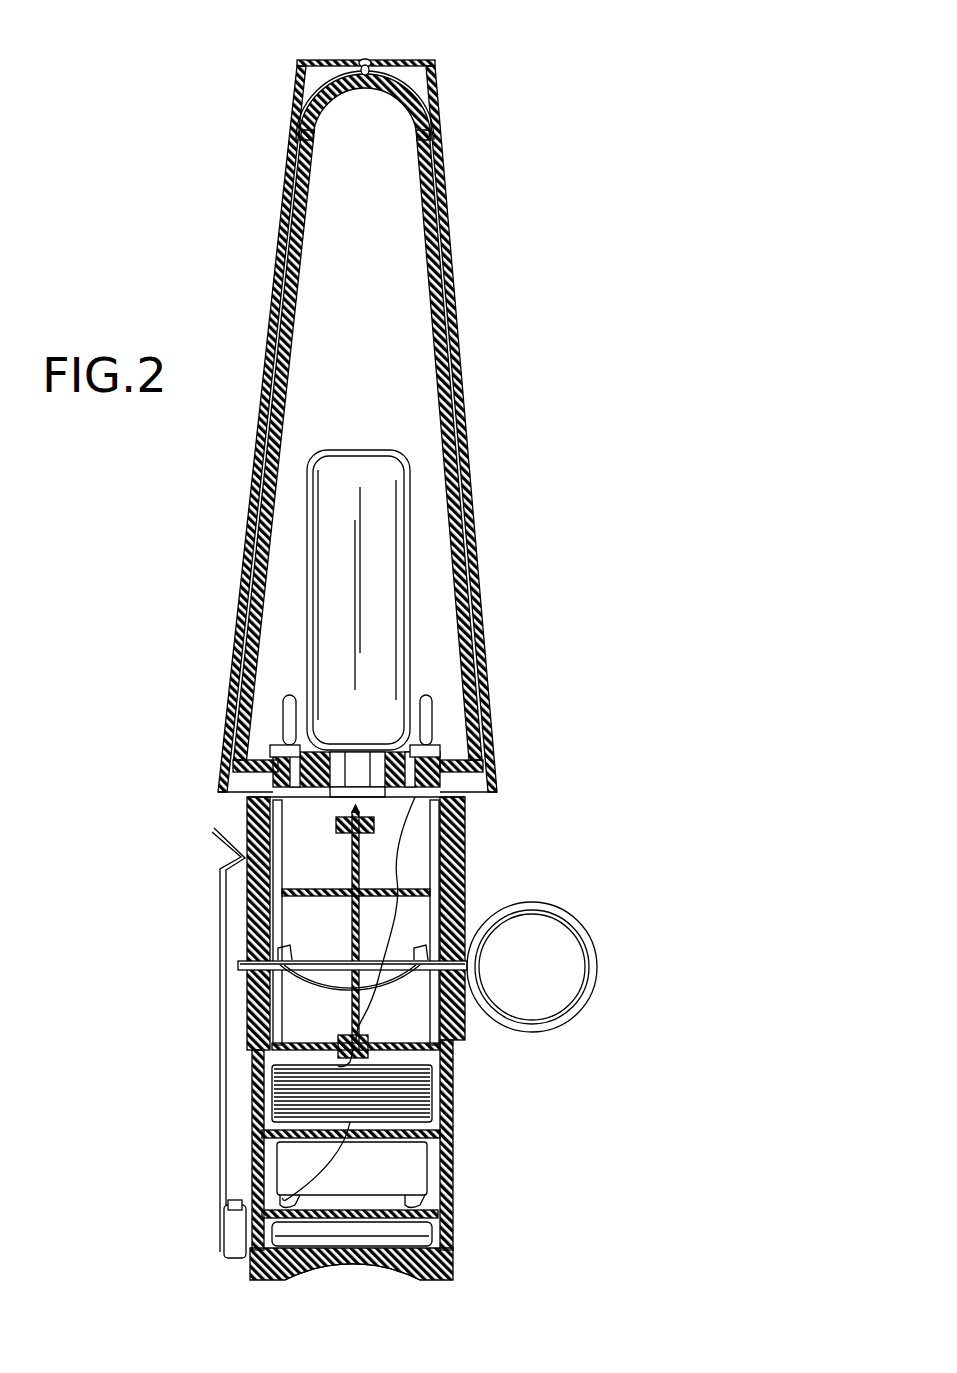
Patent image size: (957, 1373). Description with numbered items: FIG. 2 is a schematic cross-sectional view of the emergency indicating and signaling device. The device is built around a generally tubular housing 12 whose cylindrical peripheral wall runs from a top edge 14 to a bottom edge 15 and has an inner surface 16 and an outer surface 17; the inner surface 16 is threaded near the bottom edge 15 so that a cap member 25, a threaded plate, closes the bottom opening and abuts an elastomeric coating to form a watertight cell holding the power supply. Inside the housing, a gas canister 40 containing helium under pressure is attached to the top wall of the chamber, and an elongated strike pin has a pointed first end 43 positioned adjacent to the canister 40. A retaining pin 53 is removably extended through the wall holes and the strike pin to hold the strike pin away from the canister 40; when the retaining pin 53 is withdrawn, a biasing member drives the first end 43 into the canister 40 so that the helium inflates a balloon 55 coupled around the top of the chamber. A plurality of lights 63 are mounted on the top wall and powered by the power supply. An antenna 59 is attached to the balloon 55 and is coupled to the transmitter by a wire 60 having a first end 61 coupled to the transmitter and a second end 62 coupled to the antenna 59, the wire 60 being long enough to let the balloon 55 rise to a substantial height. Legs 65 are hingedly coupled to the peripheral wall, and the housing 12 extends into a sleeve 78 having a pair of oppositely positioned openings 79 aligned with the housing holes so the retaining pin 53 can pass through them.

The second end 62 is at (372, 60).
The antenna 59 is at (430, 97).
The balloon 55 is at (432, 258).
The gas canister 40 is at (368, 545).
The lights 63 is at (288, 712).
The top edge 14 is at (456, 794).
The first end 43 is at (348, 814).
The wire 60 is at (456, 868).
The openings 79 is at (396, 912).
The retaining pin 53 is at (578, 928).
The sleeve 78 is at (256, 907).
The legs 65 is at (220, 985).
The first end 61 is at (238, 1218).
The housing 12 is at (454, 1094).
The inner surface 16 is at (437, 1118).
The outer surface 17 is at (440, 1212).
The bottom edge 15 is at (452, 1275).
The cap member 25 is at (268, 1268).